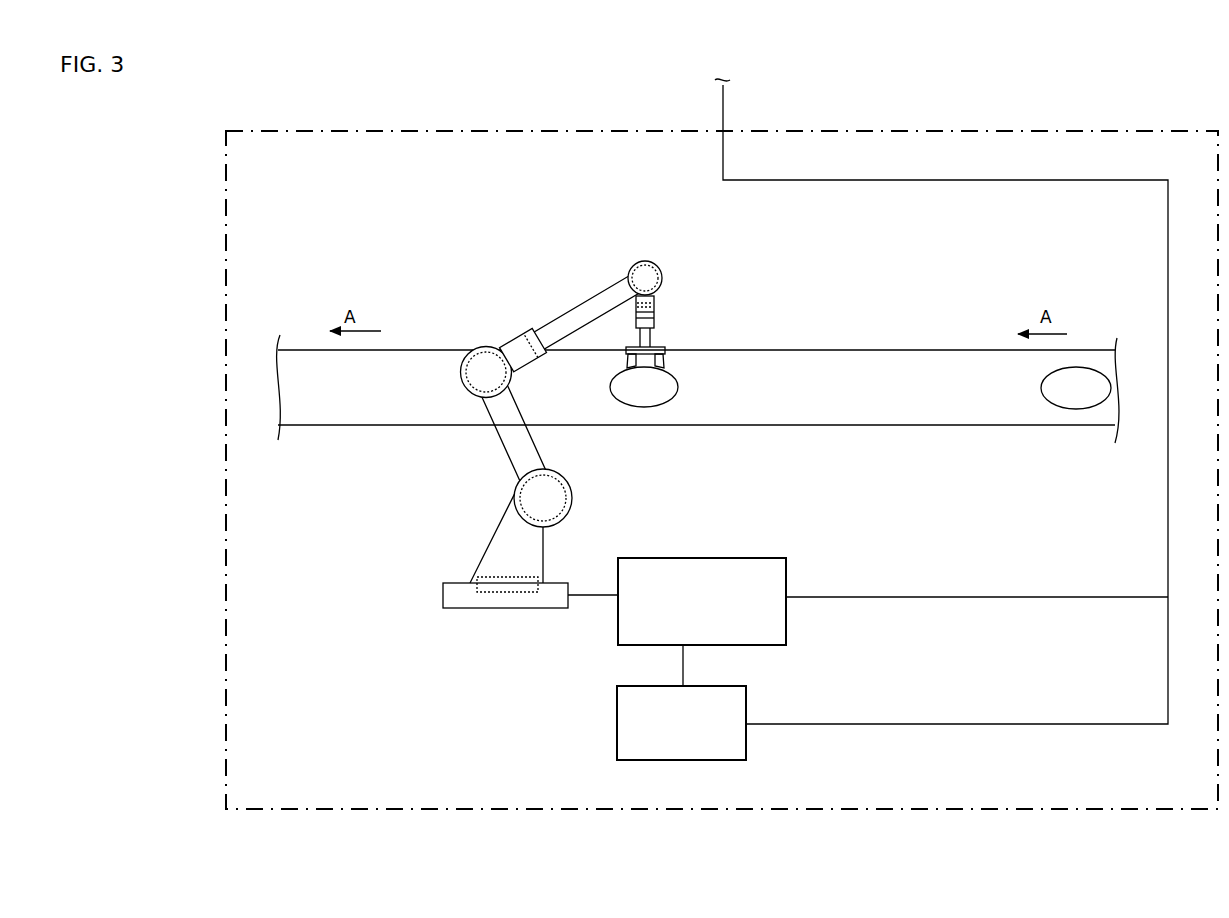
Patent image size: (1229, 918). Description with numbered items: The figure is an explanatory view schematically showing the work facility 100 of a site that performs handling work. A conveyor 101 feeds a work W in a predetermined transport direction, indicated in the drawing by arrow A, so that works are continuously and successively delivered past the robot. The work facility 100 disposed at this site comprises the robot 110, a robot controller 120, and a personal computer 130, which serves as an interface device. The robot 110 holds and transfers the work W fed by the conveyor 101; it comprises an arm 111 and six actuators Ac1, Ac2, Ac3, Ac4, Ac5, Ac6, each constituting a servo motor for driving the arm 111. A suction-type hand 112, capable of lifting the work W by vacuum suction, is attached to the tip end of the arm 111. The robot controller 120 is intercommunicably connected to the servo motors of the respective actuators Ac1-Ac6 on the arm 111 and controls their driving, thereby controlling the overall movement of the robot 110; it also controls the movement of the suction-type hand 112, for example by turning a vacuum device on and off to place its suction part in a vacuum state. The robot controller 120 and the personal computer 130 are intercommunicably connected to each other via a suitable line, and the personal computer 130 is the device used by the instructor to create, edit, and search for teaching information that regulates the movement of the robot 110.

The work facility 100 is at (326, 230).
The conveyor 101 is at (800, 357).
The robot 110 is at (575, 461).
The arm 111 is at (478, 457).
The suction-type hand 112 is at (667, 338).
The robot controller 120 is at (686, 557).
The personal computer 130 is at (617, 718).
The actuator Ac1 is at (535, 600).
The actuator Ac2 is at (563, 523).
The actuator Ac3 is at (471, 350).
The actuator Ac4 is at (532, 340).
The actuator Ac5 is at (634, 262).
The actuator Ac6 is at (656, 305).
The work W is at (678, 388).